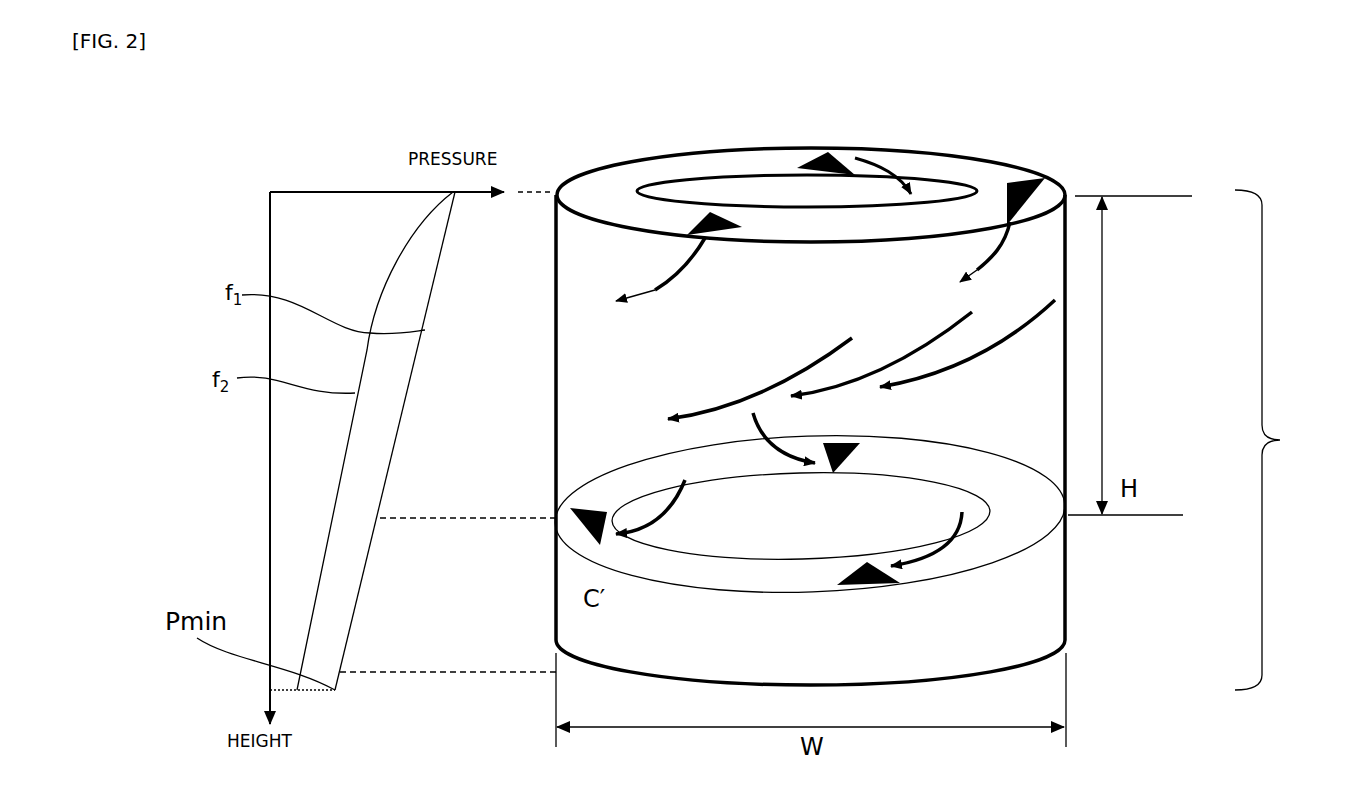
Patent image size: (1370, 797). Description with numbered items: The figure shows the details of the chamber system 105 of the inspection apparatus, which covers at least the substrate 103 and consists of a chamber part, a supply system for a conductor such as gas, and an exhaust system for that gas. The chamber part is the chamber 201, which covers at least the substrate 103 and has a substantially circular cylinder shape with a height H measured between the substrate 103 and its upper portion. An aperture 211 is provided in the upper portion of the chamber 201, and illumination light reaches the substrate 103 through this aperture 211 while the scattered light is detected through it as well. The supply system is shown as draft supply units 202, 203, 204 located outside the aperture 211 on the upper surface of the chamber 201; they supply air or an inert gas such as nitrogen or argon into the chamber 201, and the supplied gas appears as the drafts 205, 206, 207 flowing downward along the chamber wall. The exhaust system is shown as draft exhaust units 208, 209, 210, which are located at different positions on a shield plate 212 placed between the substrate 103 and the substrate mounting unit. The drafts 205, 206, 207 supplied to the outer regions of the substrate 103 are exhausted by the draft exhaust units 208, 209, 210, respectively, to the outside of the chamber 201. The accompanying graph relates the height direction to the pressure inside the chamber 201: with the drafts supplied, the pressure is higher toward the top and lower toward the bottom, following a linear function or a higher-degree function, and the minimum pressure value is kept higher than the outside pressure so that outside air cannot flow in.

The substrate 103 is at (927, 510).
The chamber system 105 is at (1280, 440).
The chamber 201 is at (1048, 598).
The draft supply unit 202 is at (823, 150).
The draft supply unit 203 is at (1062, 181).
The draft supply unit 204 is at (694, 224).
The draft 205 is at (897, 148).
The draft 206 is at (935, 333).
The draft 207 is at (648, 291).
The draft exhaust unit 208 is at (910, 587).
The draft exhaust unit 209 is at (588, 507).
The draft exhaust unit 210 is at (857, 443).
The aperture 211 is at (963, 183).
The shield plate 212 is at (1000, 540).